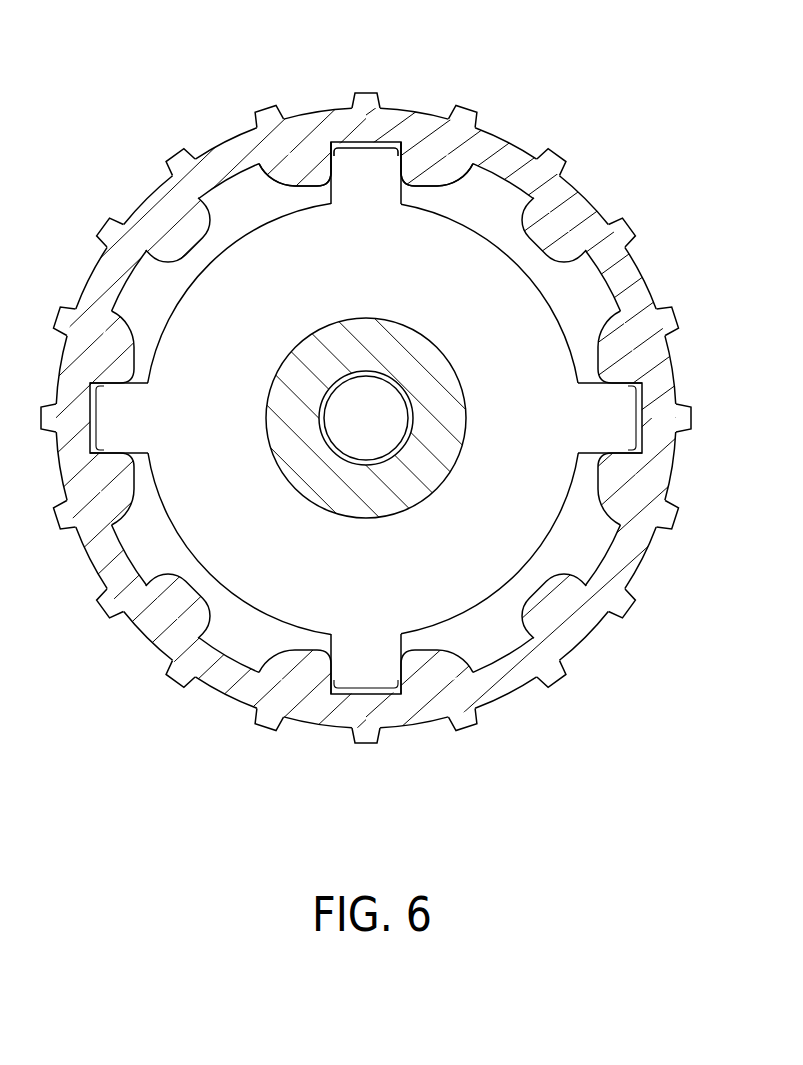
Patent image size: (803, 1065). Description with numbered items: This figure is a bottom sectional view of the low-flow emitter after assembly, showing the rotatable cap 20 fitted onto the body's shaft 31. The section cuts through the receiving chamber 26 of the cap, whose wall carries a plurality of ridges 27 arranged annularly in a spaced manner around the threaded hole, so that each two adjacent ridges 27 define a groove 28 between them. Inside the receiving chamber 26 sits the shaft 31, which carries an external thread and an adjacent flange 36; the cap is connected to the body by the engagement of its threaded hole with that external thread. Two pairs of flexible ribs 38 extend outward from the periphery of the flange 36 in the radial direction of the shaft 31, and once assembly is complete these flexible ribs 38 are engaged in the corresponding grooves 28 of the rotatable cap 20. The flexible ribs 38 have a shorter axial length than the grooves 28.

The rotatable cap 20 is at (401, 441).
The receiving chamber 26 is at (228, 177).
The ridges 27 is at (312, 170).
The grooves 28 is at (392, 145).
The shaft 31 is at (410, 487).
The flange 36 is at (438, 268).
The flexible ribs 38 is at (363, 185).